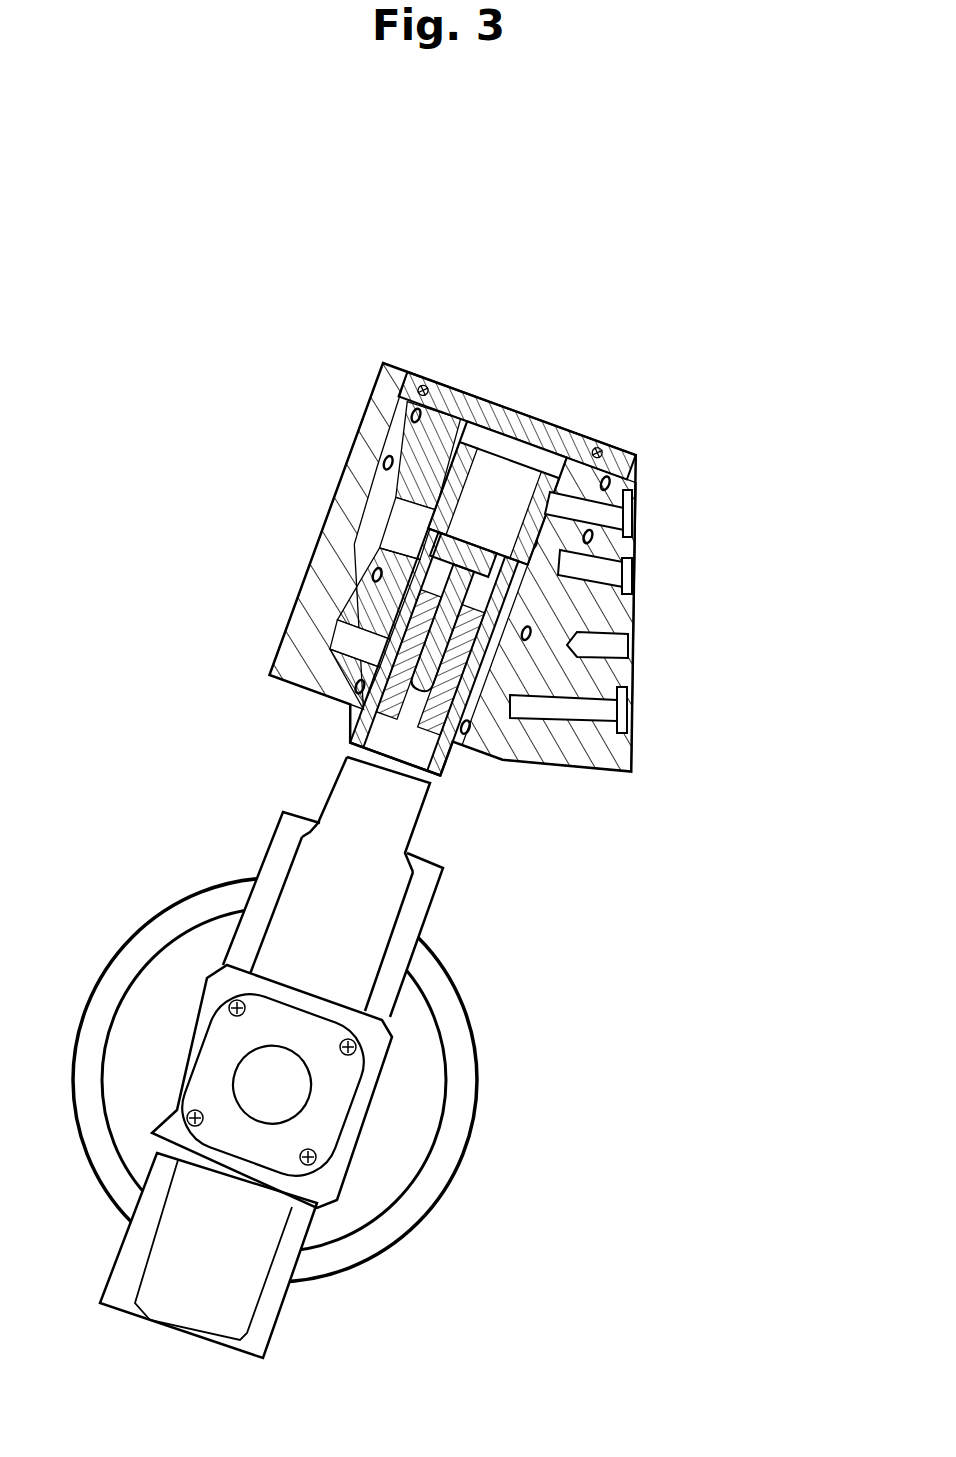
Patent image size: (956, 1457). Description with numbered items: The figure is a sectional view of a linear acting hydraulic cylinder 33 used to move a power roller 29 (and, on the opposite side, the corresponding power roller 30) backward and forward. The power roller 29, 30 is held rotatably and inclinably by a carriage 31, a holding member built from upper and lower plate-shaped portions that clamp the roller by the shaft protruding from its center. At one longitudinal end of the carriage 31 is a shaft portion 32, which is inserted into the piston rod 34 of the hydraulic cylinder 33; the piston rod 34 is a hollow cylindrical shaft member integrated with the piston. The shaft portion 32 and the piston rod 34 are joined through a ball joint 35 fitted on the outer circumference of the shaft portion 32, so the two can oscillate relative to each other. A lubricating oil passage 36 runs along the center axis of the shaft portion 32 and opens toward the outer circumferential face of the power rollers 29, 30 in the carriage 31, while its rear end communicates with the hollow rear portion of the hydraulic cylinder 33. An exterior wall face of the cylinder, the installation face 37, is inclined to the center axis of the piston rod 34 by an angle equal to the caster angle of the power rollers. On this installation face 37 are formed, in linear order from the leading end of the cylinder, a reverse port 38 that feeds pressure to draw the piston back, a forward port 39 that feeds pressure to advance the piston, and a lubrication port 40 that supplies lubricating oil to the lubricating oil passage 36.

The power roller 29 is at (468, 1020).
The power roller 30 is at (274, 1080).
The carriage 31 is at (130, 1272).
The shaft portion 32 is at (350, 737).
The hydraulic cylinder 33 is at (490, 400).
The piston rod 34 is at (515, 480).
The ball joint 35 is at (410, 600).
The lubricating oil passage 36 is at (445, 770).
The installation face 37 is at (650, 628).
The reverse port 38 is at (636, 708).
The forward port 39 is at (636, 586).
The lubrication port 40 is at (637, 510).